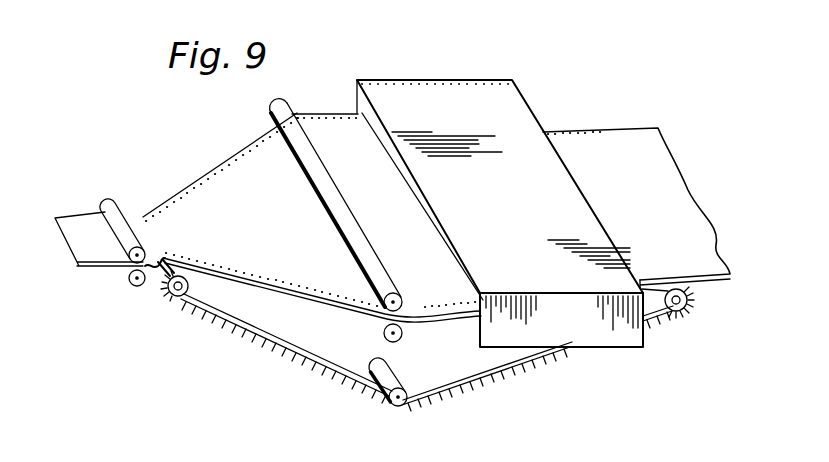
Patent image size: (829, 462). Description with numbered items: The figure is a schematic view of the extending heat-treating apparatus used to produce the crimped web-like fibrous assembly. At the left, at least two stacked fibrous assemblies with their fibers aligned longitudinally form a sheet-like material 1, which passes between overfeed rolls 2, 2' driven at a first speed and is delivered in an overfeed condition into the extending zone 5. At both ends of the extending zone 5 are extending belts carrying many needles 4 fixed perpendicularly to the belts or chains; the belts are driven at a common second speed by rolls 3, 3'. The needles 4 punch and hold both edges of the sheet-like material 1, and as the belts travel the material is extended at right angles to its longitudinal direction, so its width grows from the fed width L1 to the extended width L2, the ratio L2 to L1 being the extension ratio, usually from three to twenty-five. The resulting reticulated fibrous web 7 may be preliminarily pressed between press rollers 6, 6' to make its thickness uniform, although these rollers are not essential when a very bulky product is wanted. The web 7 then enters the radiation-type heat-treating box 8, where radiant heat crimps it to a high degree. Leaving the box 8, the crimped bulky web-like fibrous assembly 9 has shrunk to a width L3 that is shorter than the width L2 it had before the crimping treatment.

The sheet-like material 1 is at (74, 224).
The overfeed roll 2 is at (120, 213).
The overfeed roll 2' is at (142, 298).
The roll 3 is at (174, 315).
The roll 3' is at (685, 327).
The needles 4 is at (306, 367).
The extending zone 5 is at (272, 238).
The press roller 6 is at (336, 186).
The press roller 6' is at (411, 345).
The reticulated fibrous web 7 is at (403, 226).
The radiation-type heat-treating box 8 is at (521, 226).
The crimped bulky web-like fibrous assembly 9 is at (695, 226).
The width of the sheet-like material L1 is at (143, 217).
The width of the extended reticulated fibrous web L2 is at (423, 307).
The width of the crimped fibrous assembly L3 is at (683, 283).